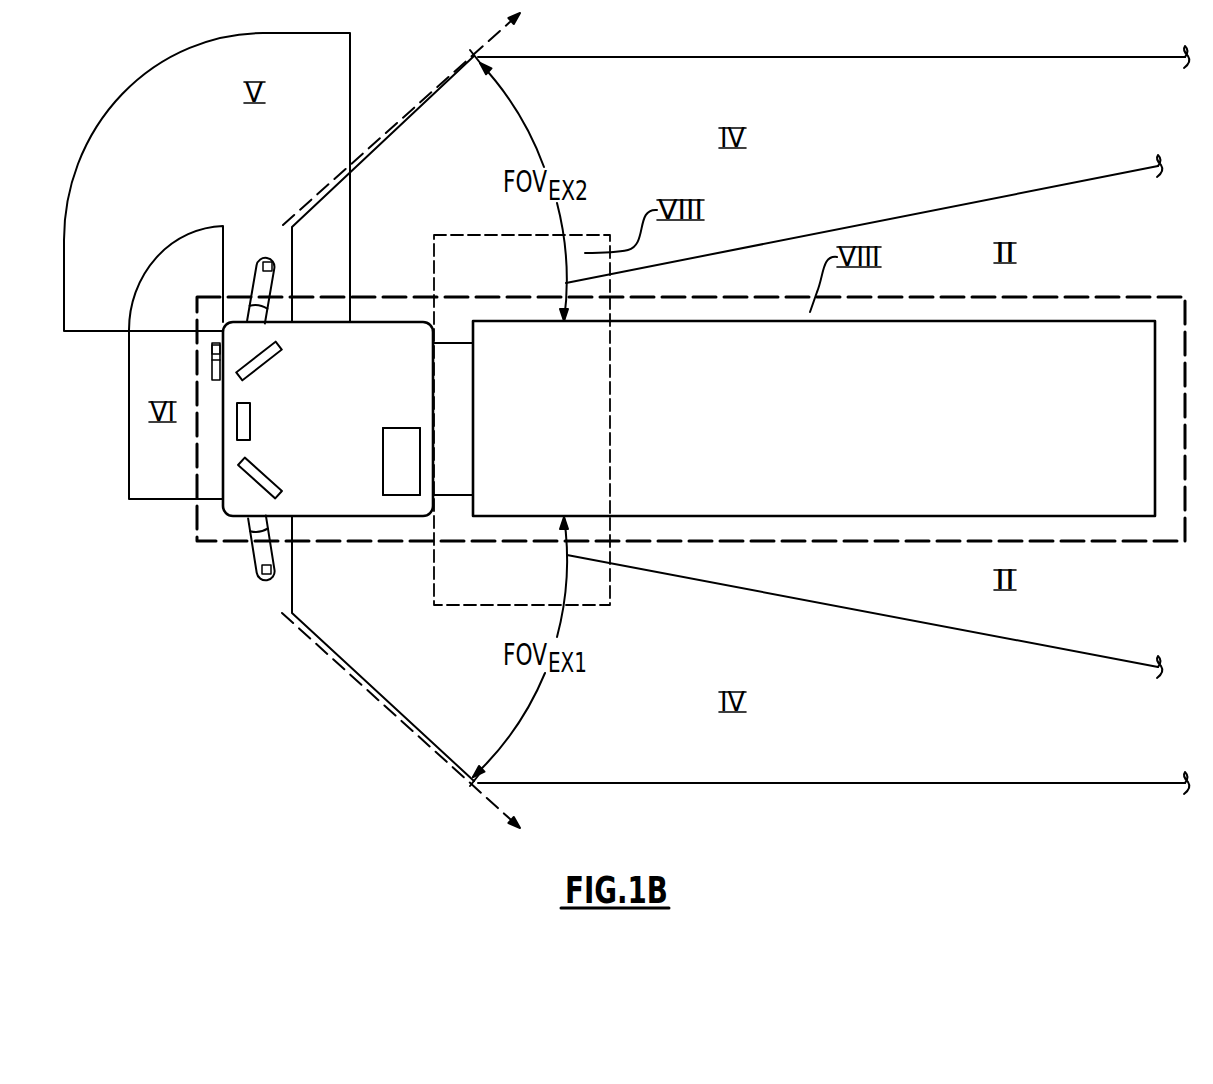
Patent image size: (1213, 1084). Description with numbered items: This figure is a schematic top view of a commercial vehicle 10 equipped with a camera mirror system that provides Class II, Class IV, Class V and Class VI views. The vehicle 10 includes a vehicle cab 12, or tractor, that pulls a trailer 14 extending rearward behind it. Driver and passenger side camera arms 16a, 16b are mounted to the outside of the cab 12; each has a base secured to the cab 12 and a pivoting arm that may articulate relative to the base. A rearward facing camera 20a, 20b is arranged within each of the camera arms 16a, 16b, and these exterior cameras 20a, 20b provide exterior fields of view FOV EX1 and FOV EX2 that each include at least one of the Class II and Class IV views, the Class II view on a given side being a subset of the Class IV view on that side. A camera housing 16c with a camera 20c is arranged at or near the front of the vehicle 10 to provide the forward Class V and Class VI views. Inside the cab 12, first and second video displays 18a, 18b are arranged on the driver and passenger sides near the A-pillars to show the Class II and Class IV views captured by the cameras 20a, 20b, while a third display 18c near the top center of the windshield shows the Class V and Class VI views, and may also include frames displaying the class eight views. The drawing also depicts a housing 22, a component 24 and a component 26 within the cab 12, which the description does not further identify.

The commercial vehicle 10 is at (195, 311).
The vehicle cab 12 is at (213, 518).
The trailer 14 is at (1065, 312).
The driver side camera arm 16a is at (257, 563).
The passenger side camera arm 16b is at (254, 279).
The camera housing 16c is at (212, 372).
The first video display 18a is at (267, 476).
The second video display 18b is at (264, 357).
The third display 18c is at (237, 427).
The rearward facing camera 20a is at (277, 570).
The rearward facing camera 20b is at (273, 267).
The camera 20c is at (212, 349).
The housing 22 is at (378, 318).
The controller 24 is at (365, 450).
The circuit board 26 is at (403, 437).